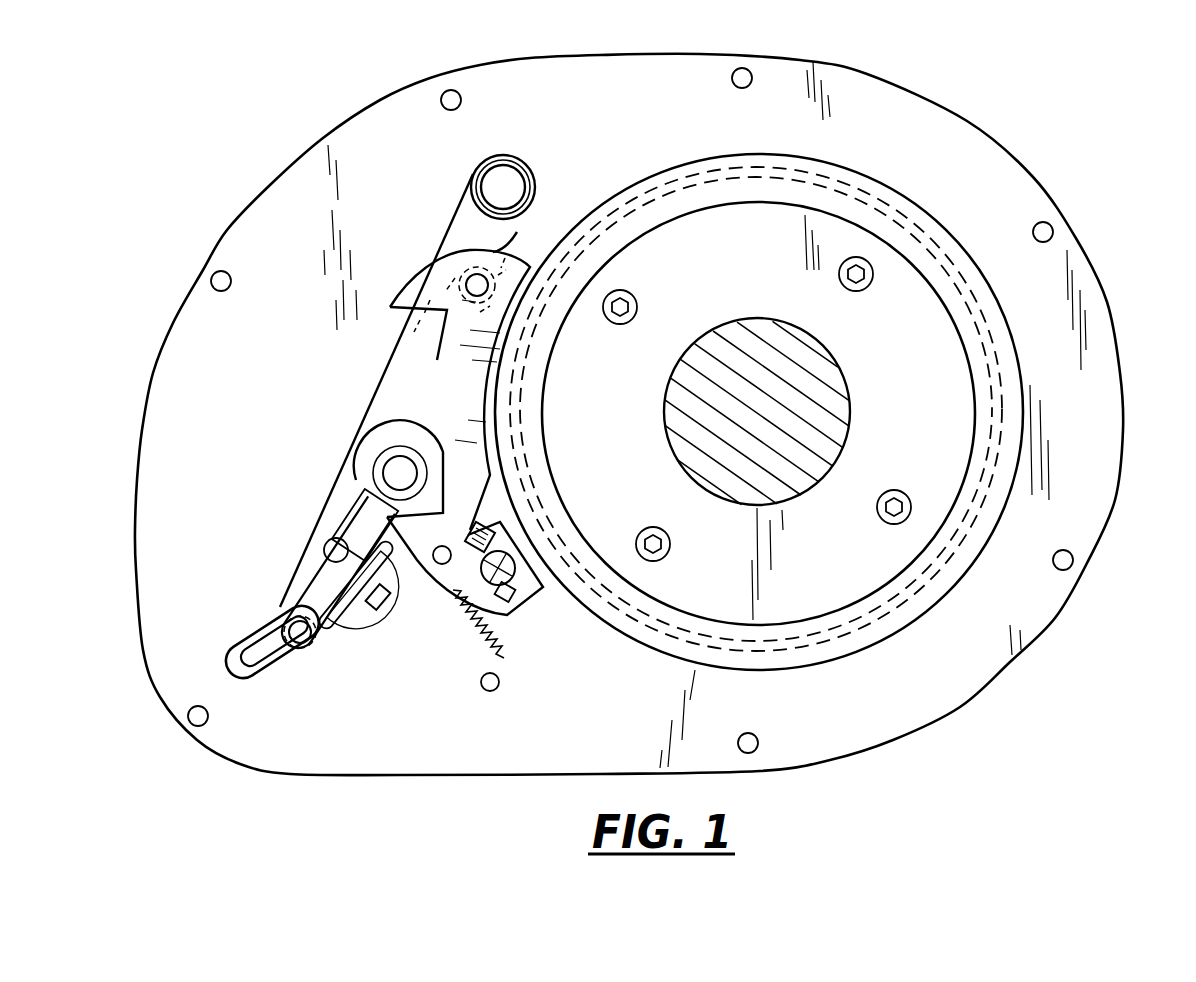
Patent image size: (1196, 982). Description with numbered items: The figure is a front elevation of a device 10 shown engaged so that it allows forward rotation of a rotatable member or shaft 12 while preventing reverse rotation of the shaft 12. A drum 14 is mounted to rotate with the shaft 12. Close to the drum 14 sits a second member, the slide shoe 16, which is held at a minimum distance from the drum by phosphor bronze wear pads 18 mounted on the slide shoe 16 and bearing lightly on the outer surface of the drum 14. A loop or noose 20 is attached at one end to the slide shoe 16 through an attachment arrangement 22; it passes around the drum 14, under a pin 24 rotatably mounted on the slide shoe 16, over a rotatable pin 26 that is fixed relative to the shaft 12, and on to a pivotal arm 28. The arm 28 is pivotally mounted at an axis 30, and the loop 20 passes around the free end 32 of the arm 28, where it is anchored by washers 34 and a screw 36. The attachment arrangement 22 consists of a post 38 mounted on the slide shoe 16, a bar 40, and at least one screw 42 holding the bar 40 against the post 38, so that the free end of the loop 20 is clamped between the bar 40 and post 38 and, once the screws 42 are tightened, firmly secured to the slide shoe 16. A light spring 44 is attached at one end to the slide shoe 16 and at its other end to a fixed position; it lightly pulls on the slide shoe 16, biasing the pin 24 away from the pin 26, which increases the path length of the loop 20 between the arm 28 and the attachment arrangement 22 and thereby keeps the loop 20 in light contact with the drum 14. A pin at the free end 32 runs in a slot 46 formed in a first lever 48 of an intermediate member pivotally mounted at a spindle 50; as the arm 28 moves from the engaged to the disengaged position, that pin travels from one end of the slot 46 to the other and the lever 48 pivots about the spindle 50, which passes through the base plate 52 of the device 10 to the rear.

The device 10 is at (990, 114).
The shaft 12 is at (762, 358).
The drum 14 is at (935, 360).
The slide shoe 16 is at (455, 358).
The wear pads 18 is at (505, 445).
The loop 20 is at (533, 250).
The attachment arrangement 22 is at (445, 530).
The pin 24 is at (473, 280).
The rotatable pin 26 is at (503, 175).
The pivotal arm 28 is at (320, 595).
The axis 30 is at (395, 473).
The free end 32 is at (303, 648).
The washers 34 is at (343, 625).
The screw 36 is at (378, 612).
The post 38 is at (510, 586).
The bar 40 is at (492, 540).
The screw 42 is at (503, 620).
The light spring 44 is at (470, 640).
The slot 46 is at (255, 652).
The first lever 48 is at (237, 661).
The spindle 50 is at (333, 540).
The base plate 52 is at (907, 704).